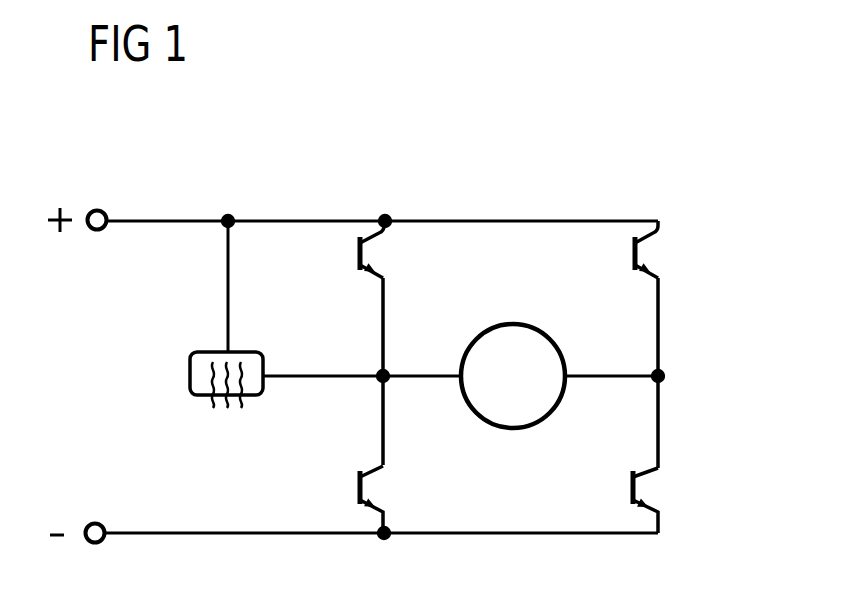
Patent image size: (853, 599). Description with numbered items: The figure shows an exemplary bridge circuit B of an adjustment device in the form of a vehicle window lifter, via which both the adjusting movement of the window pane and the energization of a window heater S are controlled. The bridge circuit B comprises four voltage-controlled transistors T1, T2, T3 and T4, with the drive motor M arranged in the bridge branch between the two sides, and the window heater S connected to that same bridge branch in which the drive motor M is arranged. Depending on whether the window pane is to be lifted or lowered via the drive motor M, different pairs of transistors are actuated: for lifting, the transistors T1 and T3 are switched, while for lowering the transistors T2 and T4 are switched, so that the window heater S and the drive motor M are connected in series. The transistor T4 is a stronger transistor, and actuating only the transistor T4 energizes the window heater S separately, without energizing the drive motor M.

The bridge circuit B is at (726, 182).
The transistor T1 is at (360, 252).
The transistor T2 is at (635, 252).
The transistor T3 is at (633, 487).
The transistor T4 is at (360, 487).
The drive motor M is at (513, 376).
The window heater S is at (212, 314).